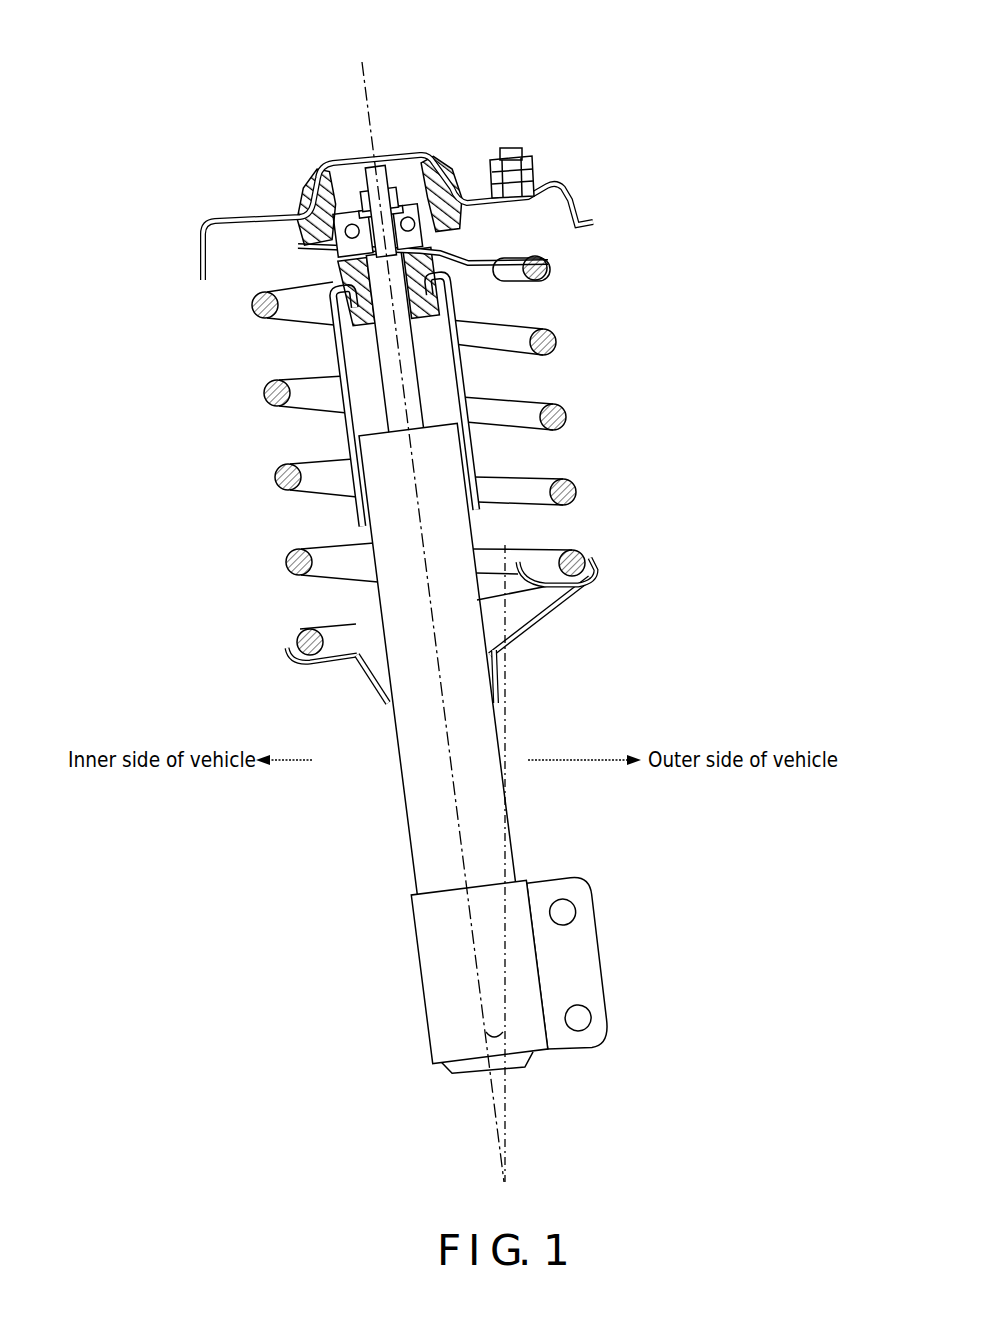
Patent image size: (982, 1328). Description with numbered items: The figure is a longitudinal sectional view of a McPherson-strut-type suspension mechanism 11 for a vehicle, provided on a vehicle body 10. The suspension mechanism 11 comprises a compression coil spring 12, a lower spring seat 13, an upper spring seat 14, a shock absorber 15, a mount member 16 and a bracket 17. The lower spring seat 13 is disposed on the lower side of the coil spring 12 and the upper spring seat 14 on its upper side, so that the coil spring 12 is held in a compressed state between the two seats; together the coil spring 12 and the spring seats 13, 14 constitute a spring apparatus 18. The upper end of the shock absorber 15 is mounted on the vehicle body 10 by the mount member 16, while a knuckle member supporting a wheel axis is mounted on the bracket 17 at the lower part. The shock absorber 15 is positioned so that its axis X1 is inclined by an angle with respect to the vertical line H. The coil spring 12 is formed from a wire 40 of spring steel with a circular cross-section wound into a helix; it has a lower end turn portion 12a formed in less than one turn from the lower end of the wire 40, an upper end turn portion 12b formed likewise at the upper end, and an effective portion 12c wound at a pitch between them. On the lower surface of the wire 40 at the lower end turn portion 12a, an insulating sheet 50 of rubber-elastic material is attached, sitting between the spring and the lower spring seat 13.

The suspension mechanism 11 is at (589, 68).
The vehicle body 10 is at (570, 192).
The mount member 16 is at (318, 177).
The upper spring seat 14 is at (484, 251).
The upper end turn portion 12b is at (550, 275).
The wire 40 is at (560, 345).
The effective portion 12c is at (567, 417).
The coil spring 12 is at (586, 439).
The spring apparatus 18 is at (268, 438).
The shock absorber 15 is at (475, 522).
The lower end turn portion 12a is at (587, 558).
The insulating sheet 50 is at (549, 588).
The lower spring seat 13 is at (337, 664).
The vertical line H is at (503, 708).
The axis X1 is at (455, 822).
The bracket 17 is at (588, 964).